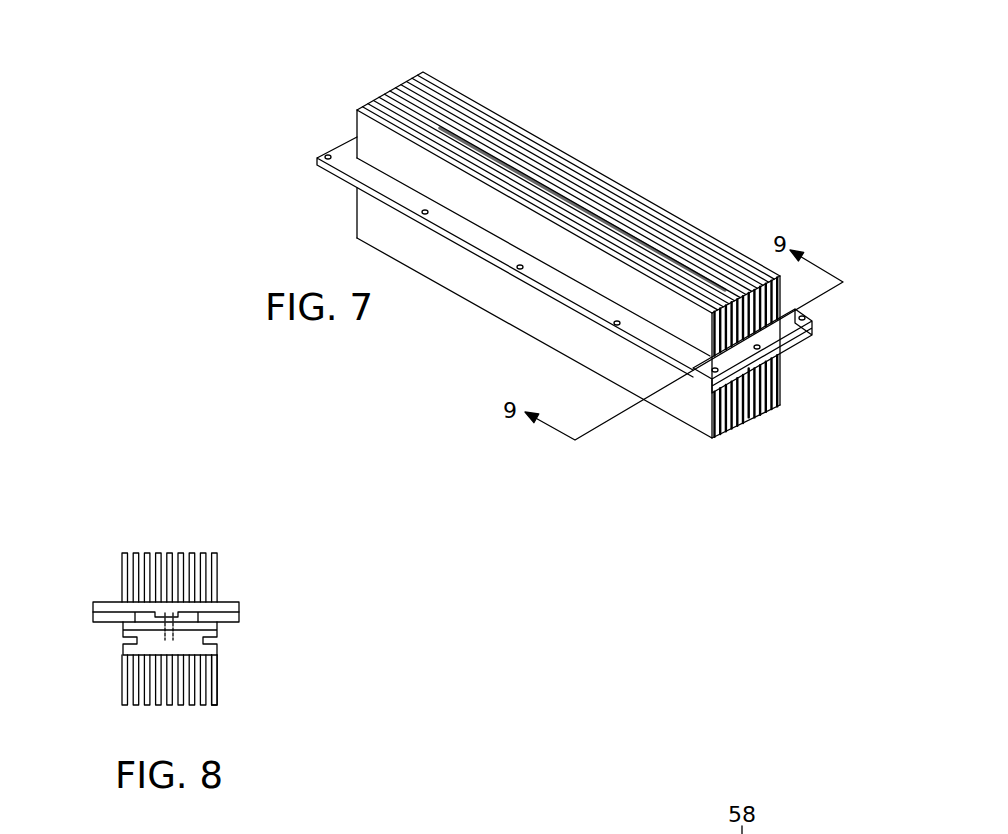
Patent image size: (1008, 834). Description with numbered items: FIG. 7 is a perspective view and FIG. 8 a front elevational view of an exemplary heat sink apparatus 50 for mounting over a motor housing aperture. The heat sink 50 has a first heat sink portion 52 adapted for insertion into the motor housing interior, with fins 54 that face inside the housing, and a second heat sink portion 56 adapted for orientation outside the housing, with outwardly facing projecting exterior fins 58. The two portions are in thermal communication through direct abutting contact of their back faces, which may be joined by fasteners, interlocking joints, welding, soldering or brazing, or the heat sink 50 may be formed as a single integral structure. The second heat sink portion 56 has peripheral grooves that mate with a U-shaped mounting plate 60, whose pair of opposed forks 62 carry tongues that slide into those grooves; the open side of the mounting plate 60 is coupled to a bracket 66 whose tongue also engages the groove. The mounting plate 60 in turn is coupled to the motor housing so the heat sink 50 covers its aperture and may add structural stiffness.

In FIG. 7, the heat sink apparatus 50 is at (533, 66).
In FIG. 7, the first heat sink portion 52 is at (695, 400).
In FIG. 8, the first heat sink portion 52 is at (123, 662).
In FIG. 7, the fins 54 is at (735, 430).
In FIG. 8, the fins 54 is at (207, 700).
In FIG. 7, the second heat sink portion 56 is at (378, 157).
In FIG. 8, the second heat sink portion 56 is at (122, 594).
In FIG. 7, the exterior fins 58 is at (615, 182).
In FIG. 8, the exterior fins 58 is at (162, 560).
In FIG. 7, the mounting plate 60 is at (312, 191).
In FIG. 7, the forks 62 is at (547, 280).
In FIG. 7, the bracket 66 is at (780, 349).